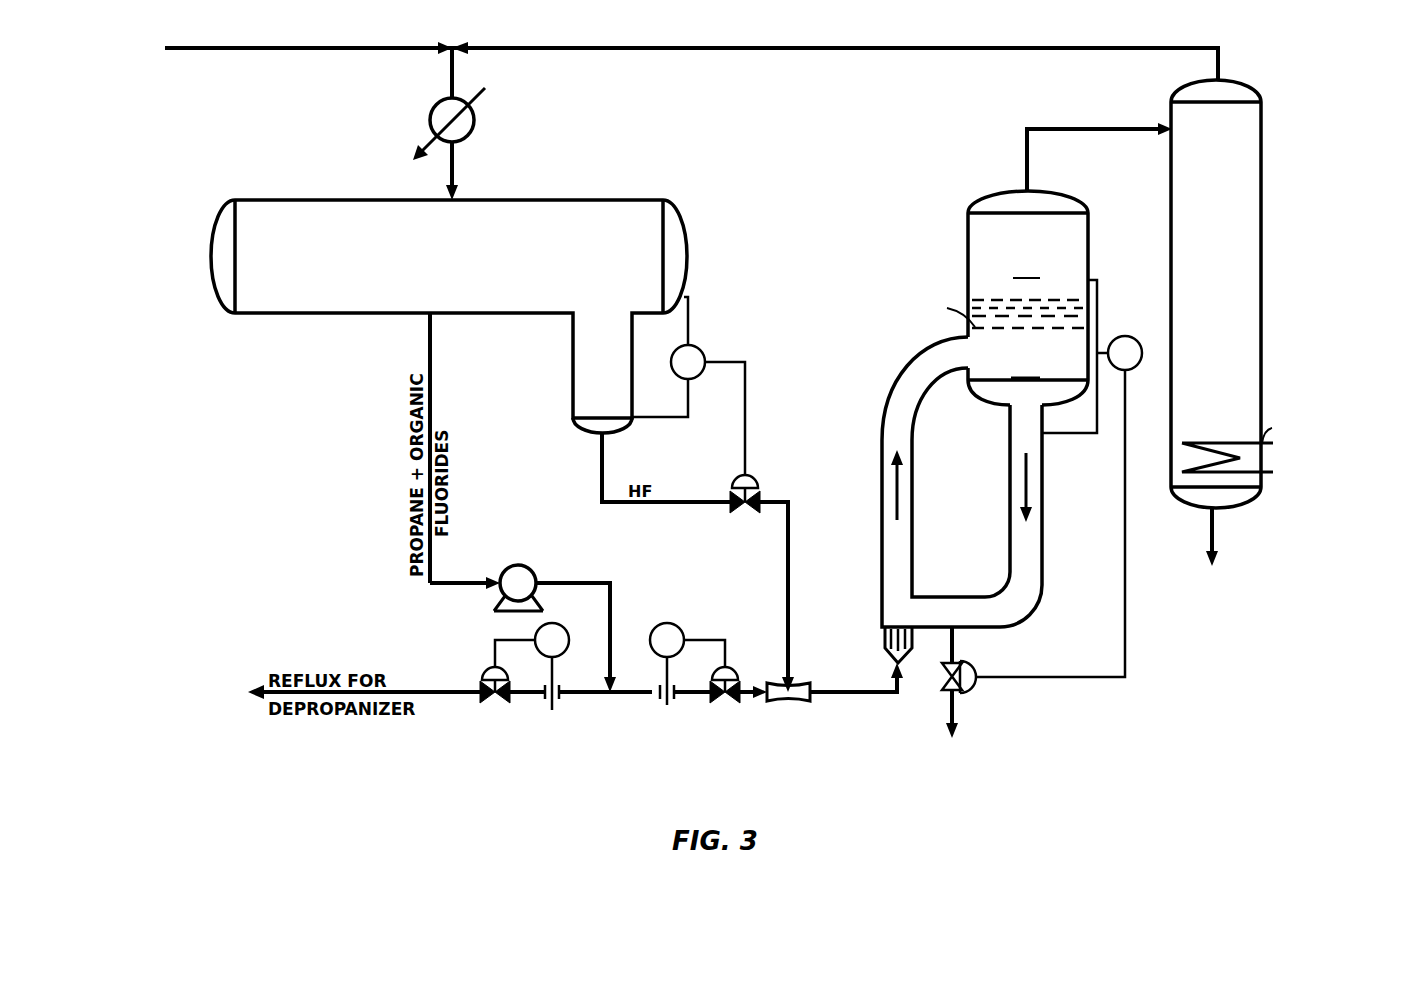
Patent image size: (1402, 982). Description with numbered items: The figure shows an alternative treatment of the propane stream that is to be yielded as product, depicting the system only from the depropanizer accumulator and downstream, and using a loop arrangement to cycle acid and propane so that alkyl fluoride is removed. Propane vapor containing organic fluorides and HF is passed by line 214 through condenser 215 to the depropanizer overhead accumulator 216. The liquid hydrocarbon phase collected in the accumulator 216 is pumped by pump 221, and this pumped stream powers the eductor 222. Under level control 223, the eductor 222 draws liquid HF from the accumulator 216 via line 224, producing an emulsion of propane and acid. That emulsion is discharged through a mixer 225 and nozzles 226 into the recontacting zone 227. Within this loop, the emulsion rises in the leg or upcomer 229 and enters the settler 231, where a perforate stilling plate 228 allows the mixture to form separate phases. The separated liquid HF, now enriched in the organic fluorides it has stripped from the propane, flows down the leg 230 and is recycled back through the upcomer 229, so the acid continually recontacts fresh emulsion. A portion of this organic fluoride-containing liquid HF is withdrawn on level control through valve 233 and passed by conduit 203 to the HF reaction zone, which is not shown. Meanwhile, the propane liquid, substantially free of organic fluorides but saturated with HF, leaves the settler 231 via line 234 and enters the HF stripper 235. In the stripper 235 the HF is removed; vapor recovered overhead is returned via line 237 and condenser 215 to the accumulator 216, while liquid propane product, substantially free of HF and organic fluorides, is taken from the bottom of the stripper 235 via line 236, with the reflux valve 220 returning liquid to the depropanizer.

The propane vapor line 214 is at (408, 50).
The HF stripper overhead line 237 is at (545, 47).
The condenser 215 is at (475, 121).
The depropanizer overhead accumulator 216 is at (468, 258).
The level control 223 is at (705, 352).
The liquid HF line 224 is at (788, 546).
The flow control valve 220 is at (448, 700).
The pump 221 is at (624, 700).
The eductor 222 is at (806, 698).
The mixer 225 is at (878, 691).
The nozzles 226 is at (884, 626).
The recontacting zone 227 is at (858, 402).
The perforate stilling plate 228 is at (1045, 331).
The leg or upcomer 229 is at (912, 465).
The leg 230 is at (1010, 514).
The settler 231 is at (1042, 237).
The valve 233 is at (942, 690).
The conduit 203 is at (956, 712).
The propane liquid line 234 is at (1027, 160).
The HF stripper 235 is at (1231, 129).
The liquid propane product line 236 is at (1212, 524).